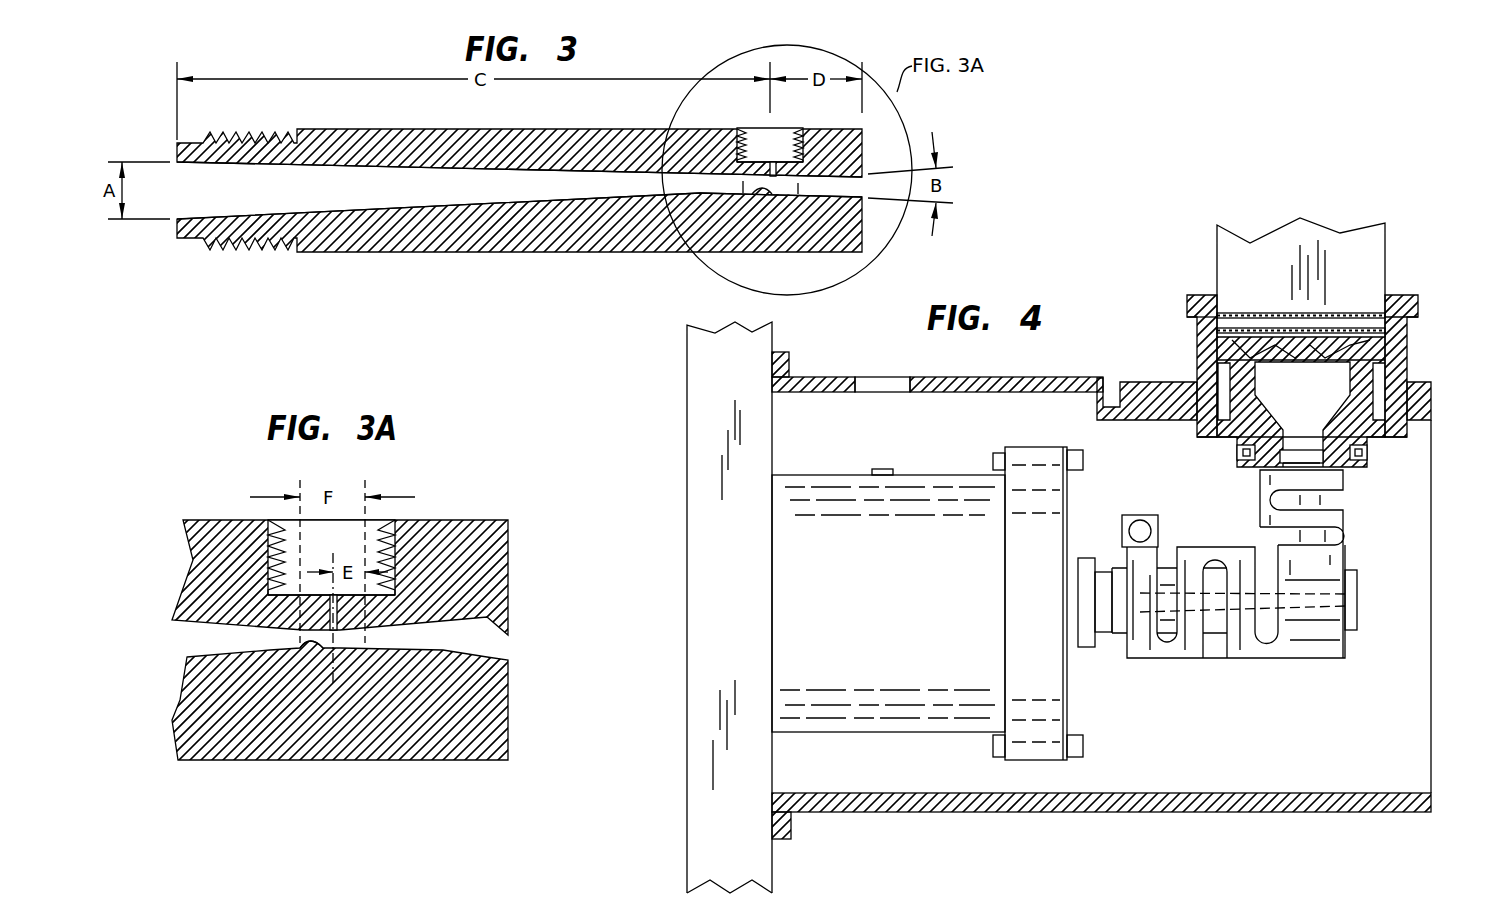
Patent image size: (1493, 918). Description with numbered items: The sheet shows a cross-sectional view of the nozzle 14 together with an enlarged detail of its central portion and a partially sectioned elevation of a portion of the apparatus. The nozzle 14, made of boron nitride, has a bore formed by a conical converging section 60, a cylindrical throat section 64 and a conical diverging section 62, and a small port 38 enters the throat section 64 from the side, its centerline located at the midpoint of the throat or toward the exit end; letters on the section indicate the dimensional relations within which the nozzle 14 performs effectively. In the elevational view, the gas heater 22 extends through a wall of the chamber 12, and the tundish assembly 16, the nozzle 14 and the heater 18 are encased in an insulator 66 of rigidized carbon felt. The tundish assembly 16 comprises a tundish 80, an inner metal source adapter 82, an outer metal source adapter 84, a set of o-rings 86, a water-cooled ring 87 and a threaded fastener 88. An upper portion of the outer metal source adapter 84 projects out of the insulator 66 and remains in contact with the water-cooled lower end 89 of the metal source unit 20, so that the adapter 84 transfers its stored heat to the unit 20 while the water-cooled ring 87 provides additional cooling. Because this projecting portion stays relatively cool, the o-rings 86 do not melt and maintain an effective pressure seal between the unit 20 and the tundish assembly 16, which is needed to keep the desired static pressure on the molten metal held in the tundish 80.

In FIG. 4, the chamber 12 is at (772, 862).
In FIG. 3, the nozzle 14 is at (422, 252).
In FIG. 4, the nozzle 14 is at (1268, 622).
In FIG. 4, the tundish assembly 16 is at (1185, 355).
In FIG. 4, the heater 18 is at (1210, 547).
In FIG. 4, the metal source unit 20 is at (1392, 243).
In FIG. 4, the gas heater 22 is at (910, 718).
In FIG. 3, the port 38 is at (778, 160).
In FIG. 3A, the port 38 is at (327, 593).
In FIG. 3, the conical converging section 60 is at (370, 182).
In FIG. 3A, the conical converging section 60 is at (190, 645).
In FIG. 3, the conical diverging section 62 is at (843, 175).
In FIG. 3A, the conical diverging section 62 is at (508, 637).
In FIG. 3, the cylindrical throat section 64 is at (755, 192).
In FIG. 3A, the cylindrical throat section 64 is at (303, 642).
In FIG. 4, the insulator 66 is at (1431, 725).
In FIG. 4, the tundish 80 is at (1333, 538).
In FIG. 4, the inner metal source adapter 82 is at (1385, 395).
In FIG. 4, the outer metal source adapter 84 is at (1418, 312).
In FIG. 4, the o-rings 86 is at (1350, 330).
In FIG. 4, the water-cooled ring 87 is at (1367, 447).
In FIG. 4, the threaded fastener 88 is at (1360, 463).
In FIG. 4, the lower end 89 is at (1217, 258).